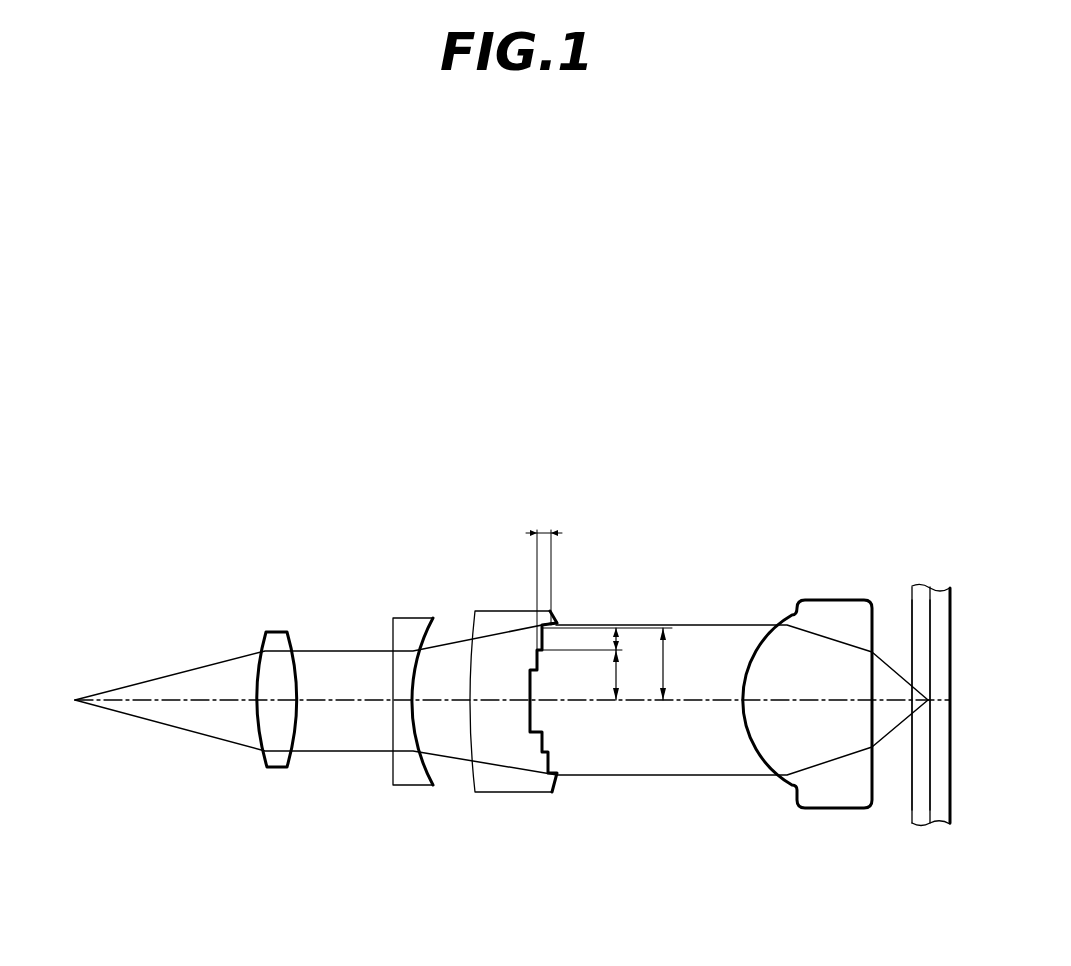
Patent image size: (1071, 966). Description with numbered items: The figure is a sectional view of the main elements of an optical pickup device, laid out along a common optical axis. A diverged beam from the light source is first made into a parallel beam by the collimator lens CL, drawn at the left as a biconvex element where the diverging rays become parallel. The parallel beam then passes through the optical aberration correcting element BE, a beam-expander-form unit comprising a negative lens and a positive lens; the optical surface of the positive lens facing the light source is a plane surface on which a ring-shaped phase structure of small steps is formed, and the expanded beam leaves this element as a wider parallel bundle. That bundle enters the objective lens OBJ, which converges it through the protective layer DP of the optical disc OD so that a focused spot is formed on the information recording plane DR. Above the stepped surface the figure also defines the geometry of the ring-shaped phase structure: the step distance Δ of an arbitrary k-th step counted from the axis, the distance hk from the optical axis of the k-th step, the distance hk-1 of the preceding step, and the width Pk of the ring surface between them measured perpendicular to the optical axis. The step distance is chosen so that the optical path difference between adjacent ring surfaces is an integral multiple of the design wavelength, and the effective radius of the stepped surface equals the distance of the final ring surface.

The collimator lens CL is at (271, 771).
The optical aberration correcting element BE is at (558, 810).
The objective lens OBJ is at (825, 809).
The optical disc OD is at (930, 586).
The protective layer DP is at (922, 826).
The information recording plane DR is at (933, 826).
The width of ring surface Pk is at (618, 640).
The distance from the optical axis of each step hk is at (626, 664).
The distance from the optical axis of the preceding step hk-1 is at (582, 675).